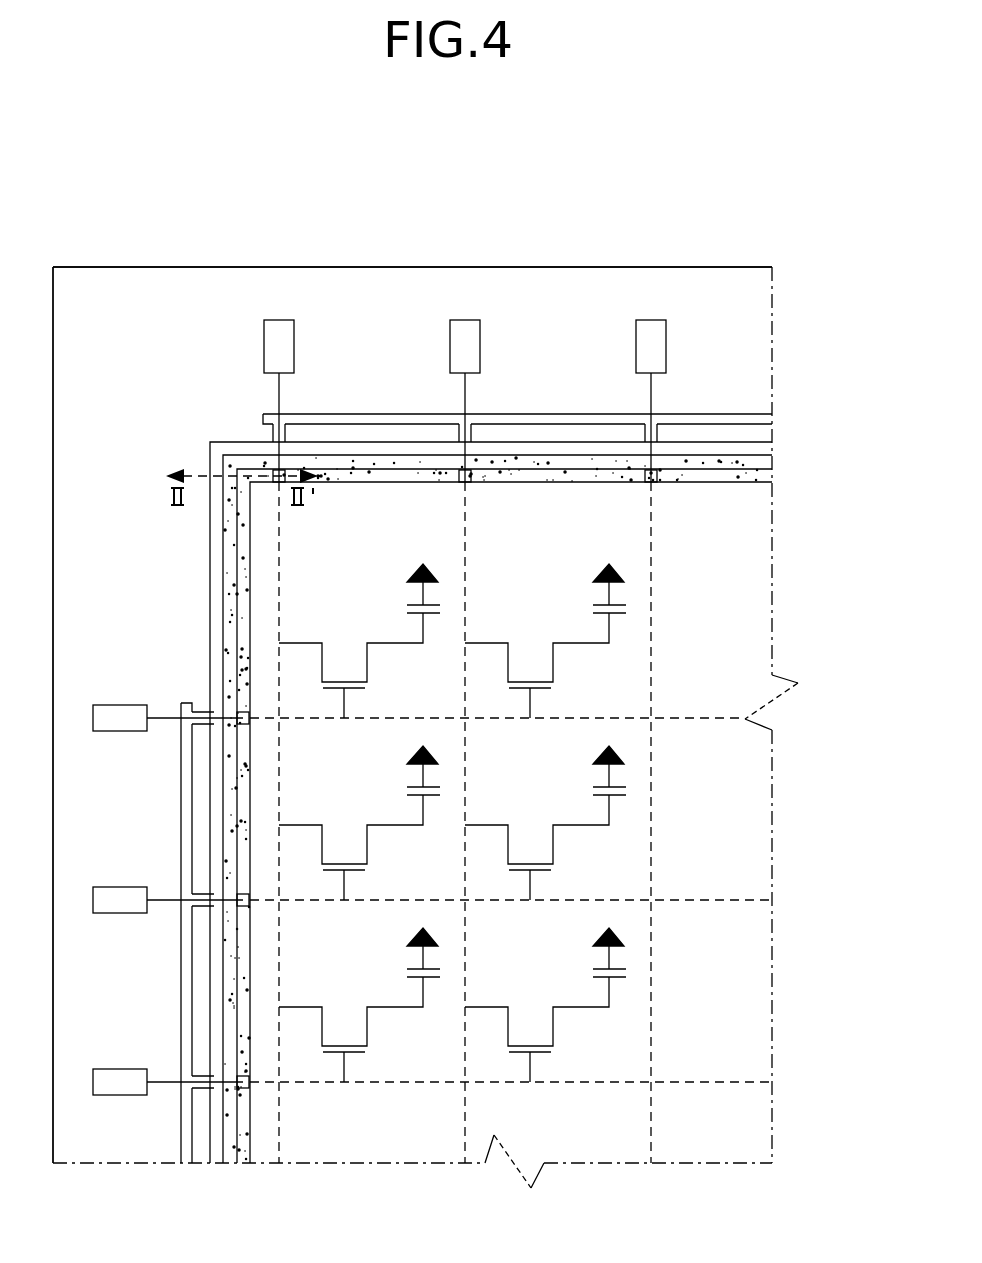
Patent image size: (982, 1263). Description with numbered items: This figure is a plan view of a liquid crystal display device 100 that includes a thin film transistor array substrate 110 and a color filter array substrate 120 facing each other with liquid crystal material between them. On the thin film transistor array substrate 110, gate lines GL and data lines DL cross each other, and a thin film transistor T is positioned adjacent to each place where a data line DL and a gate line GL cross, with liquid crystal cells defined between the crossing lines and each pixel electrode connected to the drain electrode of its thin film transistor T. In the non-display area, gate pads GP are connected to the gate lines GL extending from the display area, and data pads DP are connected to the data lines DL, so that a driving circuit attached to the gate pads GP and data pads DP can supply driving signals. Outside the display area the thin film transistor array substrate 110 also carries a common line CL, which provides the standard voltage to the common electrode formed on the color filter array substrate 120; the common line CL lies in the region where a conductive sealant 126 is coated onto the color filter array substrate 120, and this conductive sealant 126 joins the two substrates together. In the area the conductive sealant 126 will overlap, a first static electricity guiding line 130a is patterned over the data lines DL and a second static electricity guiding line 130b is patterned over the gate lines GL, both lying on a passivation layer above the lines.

The liquid crystal display device 100 is at (149, 243).
The thin film transistor array substrate 110 is at (772, 331).
The color filter array substrate 120 is at (772, 443).
The conductive sealant 126 is at (772, 476).
The first static electricity guiding line 130a is at (772, 420).
The second static electricity guiding line 130b is at (181, 703).
The data pad DP is at (276, 347).
The gate pad GP is at (118, 732).
The data line DL is at (281, 565).
The gate line GL is at (329, 720).
The common line CL is at (490, 482).
The thin film transistor T is at (452, 823).